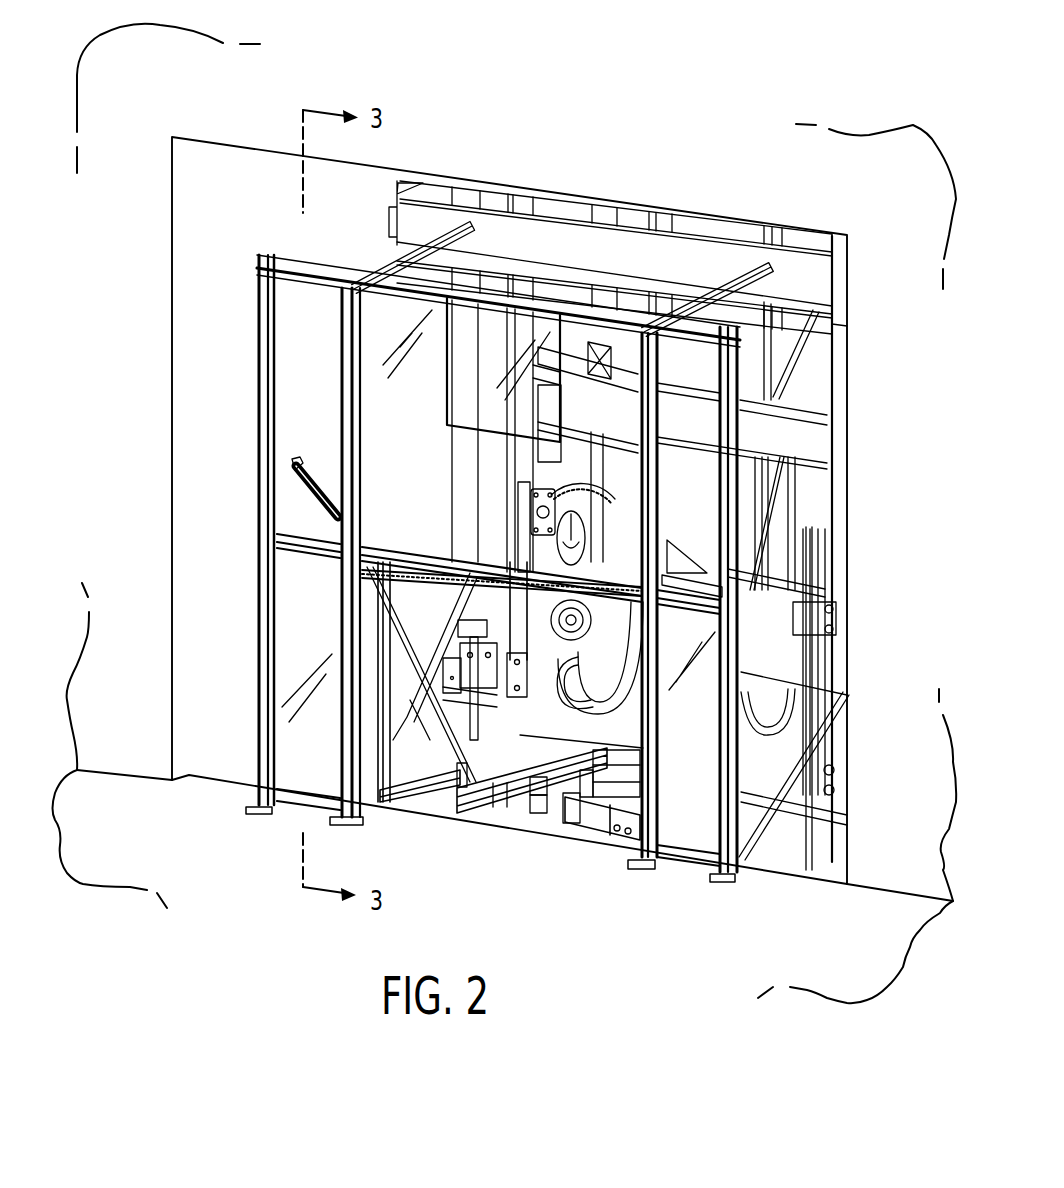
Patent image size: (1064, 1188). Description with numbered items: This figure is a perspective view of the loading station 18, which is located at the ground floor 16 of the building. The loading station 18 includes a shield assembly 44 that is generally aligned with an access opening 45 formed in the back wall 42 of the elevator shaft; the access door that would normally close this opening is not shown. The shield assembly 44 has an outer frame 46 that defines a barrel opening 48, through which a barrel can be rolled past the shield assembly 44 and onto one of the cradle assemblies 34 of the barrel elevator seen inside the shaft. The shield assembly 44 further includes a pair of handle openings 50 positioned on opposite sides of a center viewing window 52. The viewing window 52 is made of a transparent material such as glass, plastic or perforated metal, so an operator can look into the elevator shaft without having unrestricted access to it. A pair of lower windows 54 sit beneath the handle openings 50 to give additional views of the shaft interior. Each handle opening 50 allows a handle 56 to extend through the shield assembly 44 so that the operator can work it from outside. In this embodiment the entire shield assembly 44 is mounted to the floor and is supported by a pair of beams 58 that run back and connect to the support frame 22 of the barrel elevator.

The ground floor 16 is at (115, 800).
The loading station 18 is at (884, 439).
The support frame 22 is at (562, 239).
The cradle assembly 34 is at (544, 552).
The back wall 42 is at (231, 174).
The shield assembly 44 is at (250, 330).
The access opening 45 is at (846, 780).
The outer frame 46 is at (258, 489).
The barrel opening 48 is at (602, 852).
The handle opening 50 is at (300, 373).
The viewing window 52 is at (388, 325).
The lower window 54 is at (301, 632).
The handle 56 is at (292, 461).
The beam 58 is at (441, 224).